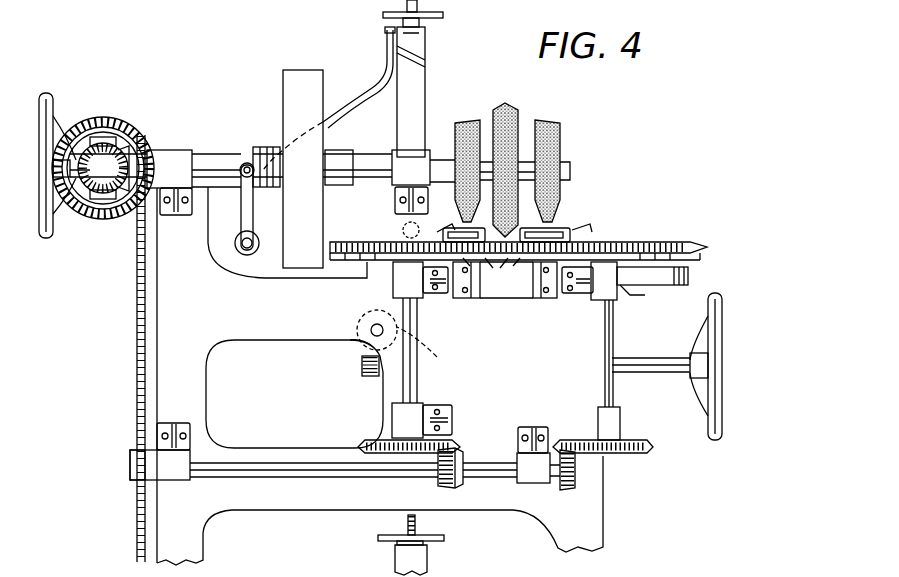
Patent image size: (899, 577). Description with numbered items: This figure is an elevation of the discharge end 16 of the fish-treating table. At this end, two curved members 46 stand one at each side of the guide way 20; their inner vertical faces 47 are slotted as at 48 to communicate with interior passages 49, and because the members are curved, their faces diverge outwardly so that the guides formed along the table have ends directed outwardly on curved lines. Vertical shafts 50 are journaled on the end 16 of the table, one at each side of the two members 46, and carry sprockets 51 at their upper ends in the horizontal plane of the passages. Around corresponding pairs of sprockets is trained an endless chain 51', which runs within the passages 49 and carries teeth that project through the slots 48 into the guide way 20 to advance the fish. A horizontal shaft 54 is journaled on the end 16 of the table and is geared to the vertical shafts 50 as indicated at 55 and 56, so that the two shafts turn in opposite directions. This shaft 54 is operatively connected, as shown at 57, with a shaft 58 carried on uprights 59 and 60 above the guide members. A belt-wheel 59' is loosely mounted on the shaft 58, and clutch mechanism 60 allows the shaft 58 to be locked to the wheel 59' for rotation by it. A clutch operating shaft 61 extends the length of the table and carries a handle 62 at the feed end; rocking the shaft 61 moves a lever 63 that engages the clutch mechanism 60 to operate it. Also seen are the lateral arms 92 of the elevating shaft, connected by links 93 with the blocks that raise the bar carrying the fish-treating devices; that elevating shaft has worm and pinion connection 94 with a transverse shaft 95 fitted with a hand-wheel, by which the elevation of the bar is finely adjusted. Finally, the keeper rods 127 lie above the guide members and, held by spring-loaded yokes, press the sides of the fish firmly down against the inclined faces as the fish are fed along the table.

The discharge end 16 is at (312, 336).
The guide way 20 is at (506, 283).
The members 46 is at (466, 298).
The inner vertical faces 47 is at (566, 232).
The slots 48 is at (588, 243).
The interior passages 49 is at (590, 265).
The shafts 50 is at (410, 382).
The sprockets 51 is at (532, 277).
The endless chain 51' is at (504, 261).
The horizontal shaft 54 is at (325, 476).
The gearing 55 is at (452, 489).
The gearing 56 is at (580, 475).
The operative connection 57 is at (130, 451).
The shaft 58 is at (204, 170).
The upright 59 is at (350, 376).
The belt-wheel 59' is at (294, 149).
The clutch mechanism 60 is at (262, 150).
The clutch operating shaft 61 is at (247, 255).
The handle 62 is at (350, 101).
The lever 63 is at (237, 220).
The lateral arms 92 is at (430, 357).
The links 93 is at (366, 313).
The worm and pinion connection 94 is at (368, 369).
The transverse shaft 95 is at (645, 360).
The keeper rods 127 is at (538, 216).